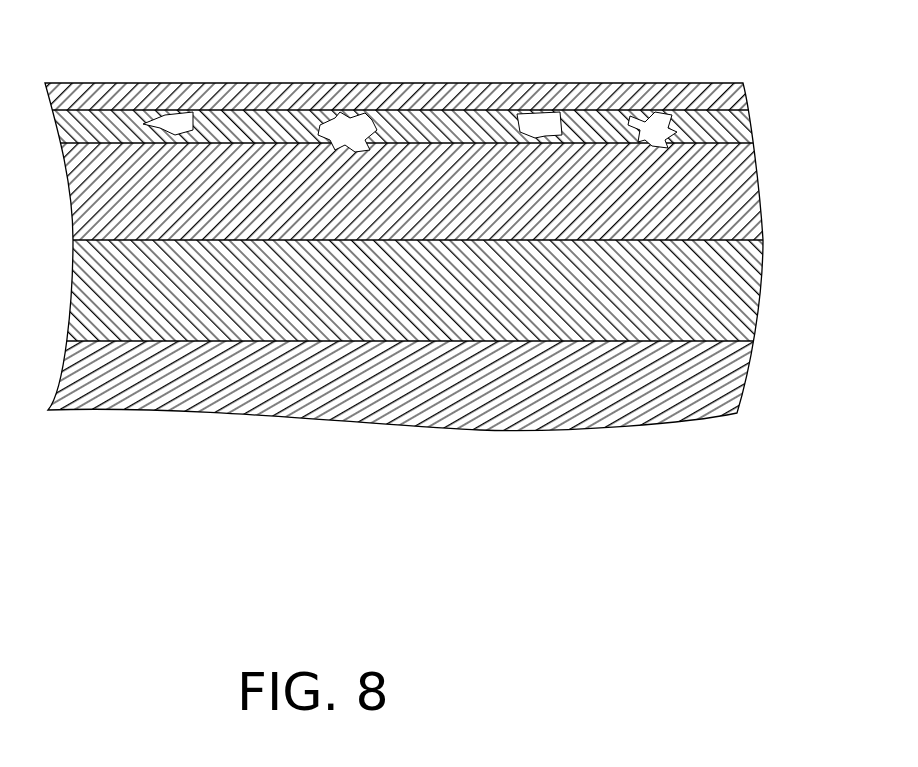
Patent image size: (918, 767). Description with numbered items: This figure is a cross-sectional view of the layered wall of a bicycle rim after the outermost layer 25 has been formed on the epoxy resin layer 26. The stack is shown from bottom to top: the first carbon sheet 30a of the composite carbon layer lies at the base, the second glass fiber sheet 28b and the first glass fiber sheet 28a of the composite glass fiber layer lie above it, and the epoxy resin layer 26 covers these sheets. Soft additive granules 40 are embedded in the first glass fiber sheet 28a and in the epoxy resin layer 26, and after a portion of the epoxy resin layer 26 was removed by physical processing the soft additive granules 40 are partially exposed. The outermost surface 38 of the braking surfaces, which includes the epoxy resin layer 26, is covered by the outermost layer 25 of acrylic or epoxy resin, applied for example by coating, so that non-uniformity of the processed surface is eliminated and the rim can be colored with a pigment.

The outermost layer 25 is at (722, 85).
The epoxy resin layer 26 is at (733, 124).
The first glass fiber sheet 28a is at (423, 191).
The second glass fiber sheet 28b is at (703, 288).
The first carbon sheet 30a is at (717, 378).
The outermost surface 38 is at (90, 107).
The soft additive granules 40 is at (337, 110).